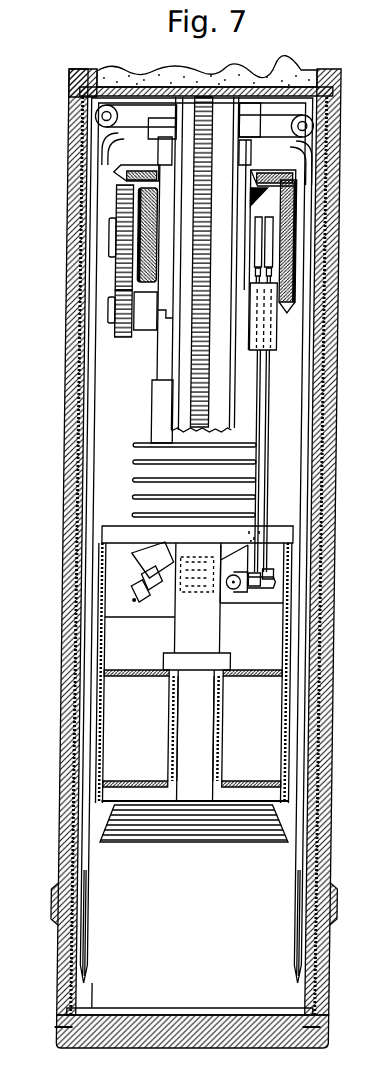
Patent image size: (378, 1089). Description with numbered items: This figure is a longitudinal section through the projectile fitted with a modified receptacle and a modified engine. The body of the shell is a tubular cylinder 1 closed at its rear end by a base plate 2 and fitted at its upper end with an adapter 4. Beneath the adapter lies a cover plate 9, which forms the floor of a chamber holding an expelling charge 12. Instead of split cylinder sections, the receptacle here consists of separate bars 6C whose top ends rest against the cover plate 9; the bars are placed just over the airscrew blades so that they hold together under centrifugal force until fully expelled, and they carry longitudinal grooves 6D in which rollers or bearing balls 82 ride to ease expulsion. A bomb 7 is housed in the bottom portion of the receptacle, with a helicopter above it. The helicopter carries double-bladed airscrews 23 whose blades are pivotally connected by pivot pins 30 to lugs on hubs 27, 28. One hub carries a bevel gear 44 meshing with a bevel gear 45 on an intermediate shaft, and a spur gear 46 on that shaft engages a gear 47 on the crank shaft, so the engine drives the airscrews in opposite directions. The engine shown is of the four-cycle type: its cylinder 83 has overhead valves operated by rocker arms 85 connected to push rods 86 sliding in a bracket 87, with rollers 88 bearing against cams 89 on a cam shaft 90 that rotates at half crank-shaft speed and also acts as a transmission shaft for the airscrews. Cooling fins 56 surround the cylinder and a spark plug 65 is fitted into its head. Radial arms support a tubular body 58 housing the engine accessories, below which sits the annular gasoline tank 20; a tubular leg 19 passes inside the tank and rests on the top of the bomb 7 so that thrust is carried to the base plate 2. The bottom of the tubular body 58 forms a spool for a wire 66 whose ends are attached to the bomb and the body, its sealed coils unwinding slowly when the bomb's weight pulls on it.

The tubular cylinder 1 is at (338, 216).
The base plate 2 is at (214, 1049).
The adapter 4 is at (78, 69).
The bomb 7 is at (116, 990).
The cover plate 9 is at (264, 87).
The expelling charge 12 is at (126, 69).
The tubular leg 19 is at (221, 753).
The gasoline tank 20 is at (259, 677).
The double-bladed airscrew 23 is at (100, 913).
The hub 27 is at (255, 155).
The hub 28 is at (246, 124).
The pivot pin 30 is at (311, 125).
The bevel gear 44 is at (127, 170).
The bevel gear 45 is at (298, 284).
The spur gear 46 is at (120, 208).
The gear 47 is at (125, 338).
The cooling fins 56 is at (143, 486).
The tubular body 58 is at (113, 653).
The spark plug 65 is at (150, 597).
The wire 66 is at (174, 845).
The rollers or bearing balls 82 is at (212, 388).
The cylinder 83 is at (157, 415).
The rocker arm 85 is at (276, 590).
The push rod 86 is at (266, 416).
The bracket 87 is at (275, 319).
The roller 88 is at (257, 279).
The cam 89 is at (263, 233).
The cam shaft 90 is at (271, 250).
The bars 6C is at (350, 507).
The longitudinal grooves 6D is at (348, 341).